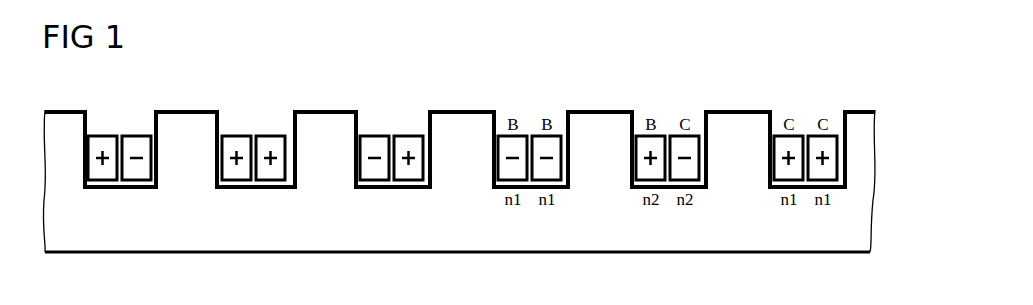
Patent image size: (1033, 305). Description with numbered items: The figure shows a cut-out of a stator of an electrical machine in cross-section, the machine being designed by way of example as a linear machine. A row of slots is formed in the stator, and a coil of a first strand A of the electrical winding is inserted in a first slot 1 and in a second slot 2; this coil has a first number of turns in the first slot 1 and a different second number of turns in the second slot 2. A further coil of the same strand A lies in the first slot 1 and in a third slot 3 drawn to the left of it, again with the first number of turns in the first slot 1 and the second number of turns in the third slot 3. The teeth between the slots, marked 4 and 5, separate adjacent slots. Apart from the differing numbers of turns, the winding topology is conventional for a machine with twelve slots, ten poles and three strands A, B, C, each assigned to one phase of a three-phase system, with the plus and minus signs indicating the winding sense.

The first slot 1 is at (260, 210).
The second slot 2 is at (398, 210).
The third slot 3 is at (122, 210).
The stator tooth 4 is at (194, 180).
The stator tooth 5 is at (331, 180).